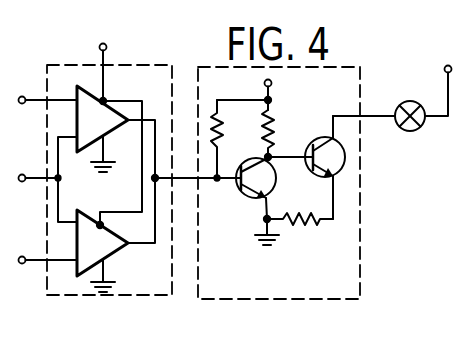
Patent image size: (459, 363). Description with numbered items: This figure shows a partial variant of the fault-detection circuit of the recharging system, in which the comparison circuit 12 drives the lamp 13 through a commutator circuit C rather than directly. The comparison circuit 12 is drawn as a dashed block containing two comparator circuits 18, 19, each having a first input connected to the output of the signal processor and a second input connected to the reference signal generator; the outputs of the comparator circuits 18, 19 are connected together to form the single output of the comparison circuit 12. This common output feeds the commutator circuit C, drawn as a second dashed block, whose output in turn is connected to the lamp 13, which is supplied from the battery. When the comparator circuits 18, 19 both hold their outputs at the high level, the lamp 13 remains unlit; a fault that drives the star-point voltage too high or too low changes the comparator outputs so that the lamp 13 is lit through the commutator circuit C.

The comparison circuit 12 is at (130, 170).
The comparator circuit 18 is at (88, 94).
The comparator circuit 19 is at (102, 245).
The lamp 13 is at (416, 124).
The commutator circuit C is at (322, 277).